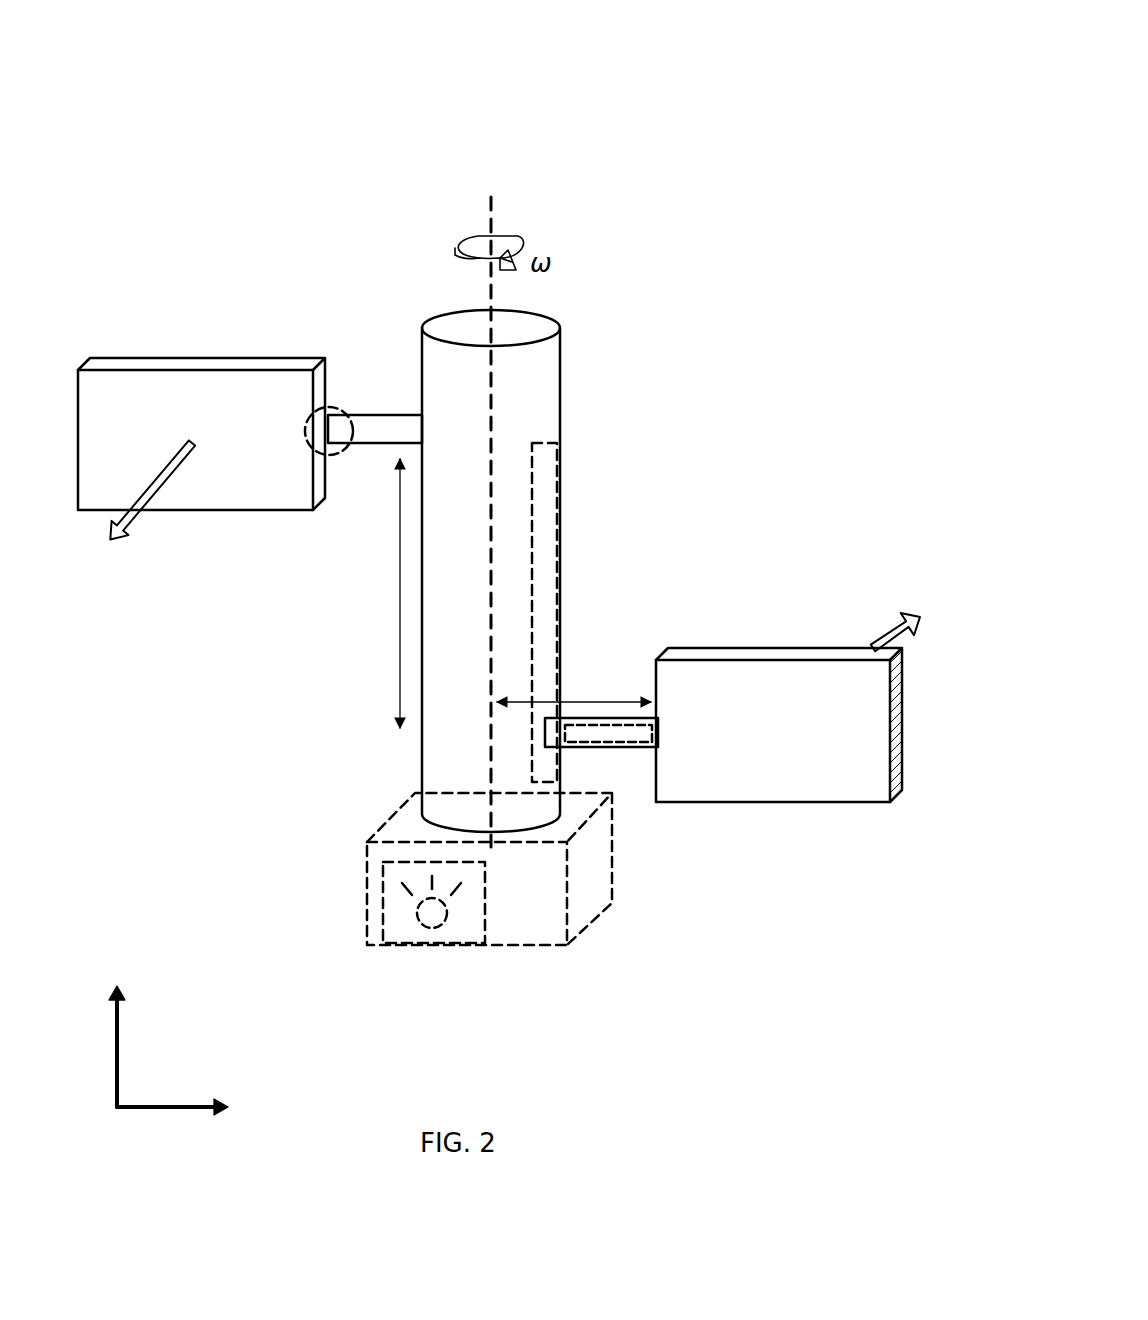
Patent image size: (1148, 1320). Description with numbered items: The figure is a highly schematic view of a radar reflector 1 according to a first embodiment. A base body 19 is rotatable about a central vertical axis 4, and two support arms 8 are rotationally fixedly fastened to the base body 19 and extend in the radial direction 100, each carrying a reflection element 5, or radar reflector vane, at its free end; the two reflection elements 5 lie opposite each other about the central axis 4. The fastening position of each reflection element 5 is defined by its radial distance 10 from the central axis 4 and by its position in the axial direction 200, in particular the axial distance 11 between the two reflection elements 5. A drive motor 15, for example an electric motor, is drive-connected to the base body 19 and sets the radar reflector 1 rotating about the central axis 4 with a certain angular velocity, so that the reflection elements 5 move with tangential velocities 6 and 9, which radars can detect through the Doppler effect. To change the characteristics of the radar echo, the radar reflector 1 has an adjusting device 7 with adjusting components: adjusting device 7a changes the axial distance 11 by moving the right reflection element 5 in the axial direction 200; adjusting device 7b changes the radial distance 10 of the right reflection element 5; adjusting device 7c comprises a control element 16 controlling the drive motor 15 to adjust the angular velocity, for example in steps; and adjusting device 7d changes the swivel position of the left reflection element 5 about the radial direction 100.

The radar reflector 1 is at (283, 125).
The central vertical axis 4 is at (493, 210).
The reflection element 5 is at (235, 492).
The tangential velocity 6 is at (135, 512).
The adjusting device 7 is at (645, 593).
The adjusting device 7a is at (545, 593).
The adjusting device 7b is at (630, 742).
The adjusting device 7c is at (393, 918).
The adjusting device 7d is at (335, 410).
The support arm 8 is at (362, 413).
The tangential velocity 9 is at (887, 638).
The radial distance 10 is at (577, 700).
The axial distance 11 is at (398, 633).
The drive motor 15 is at (582, 910).
The control element 16 is at (438, 927).
The base body 19 is at (545, 378).
The radial direction 100 is at (175, 1110).
The axial direction 200 is at (117, 1042).